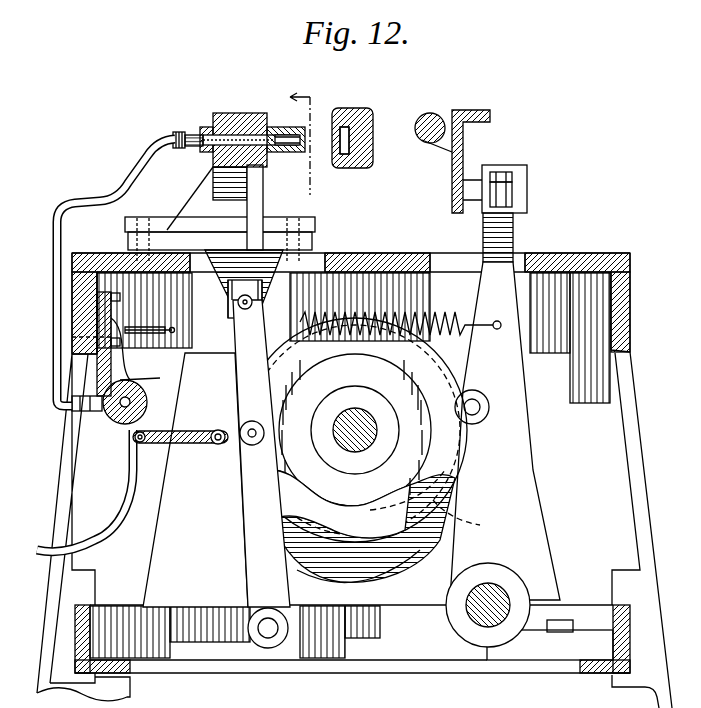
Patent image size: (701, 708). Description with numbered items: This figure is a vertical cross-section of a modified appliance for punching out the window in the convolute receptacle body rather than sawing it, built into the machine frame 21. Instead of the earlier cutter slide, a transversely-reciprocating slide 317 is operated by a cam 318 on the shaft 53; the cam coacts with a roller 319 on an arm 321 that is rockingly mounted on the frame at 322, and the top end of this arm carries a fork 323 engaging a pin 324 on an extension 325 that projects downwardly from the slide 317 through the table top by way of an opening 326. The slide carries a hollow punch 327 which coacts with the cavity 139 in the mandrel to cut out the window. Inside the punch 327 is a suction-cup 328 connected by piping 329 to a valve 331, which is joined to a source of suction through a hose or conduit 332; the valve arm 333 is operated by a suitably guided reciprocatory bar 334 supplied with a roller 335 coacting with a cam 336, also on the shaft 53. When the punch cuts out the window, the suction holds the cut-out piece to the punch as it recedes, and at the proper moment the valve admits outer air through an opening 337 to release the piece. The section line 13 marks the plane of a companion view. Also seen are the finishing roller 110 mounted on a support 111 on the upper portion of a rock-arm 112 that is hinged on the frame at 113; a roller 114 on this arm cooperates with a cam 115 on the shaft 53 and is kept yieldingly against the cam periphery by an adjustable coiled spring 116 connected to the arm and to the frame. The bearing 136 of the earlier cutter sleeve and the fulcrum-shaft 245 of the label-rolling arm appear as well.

The hinge point on frame 13 is at (320, 335).
The frame 21 is at (382, 266).
The shaft 53 is at (360, 418).
The roller 110 is at (428, 142).
The support 111 is at (452, 176).
The rock-arm 112 is at (510, 340).
The hinge on frame 113 is at (460, 624).
The roller 114 is at (485, 402).
The cam 115 is at (458, 520).
The coiled spring 116 is at (408, 292).
The bearing 136 is at (372, 125).
The cavity 139 is at (348, 120).
The fulcrum-shaft 245 is at (474, 608).
The transversely-reciprocating slide 317 is at (227, 240).
The cam 318 is at (372, 528).
The roller 319 is at (248, 442).
The arm 321 is at (250, 560).
The frame mounting 322 is at (250, 628).
The fork 323 is at (232, 304).
The pin 324 is at (230, 322).
The extension 325 is at (225, 282).
The opening 326 is at (200, 298).
The hollow punch 327 is at (288, 152).
The suction-cup 328 is at (286, 136).
The piping 329 is at (108, 195).
The valve 331 is at (118, 398).
The hose or conduit 332 is at (115, 520).
The valve arm 333 is at (130, 438).
The reciprocatory bar 334 is at (205, 430).
The roller 335 is at (225, 428).
The cam 336 is at (395, 565).
The opening 337 is at (128, 372).